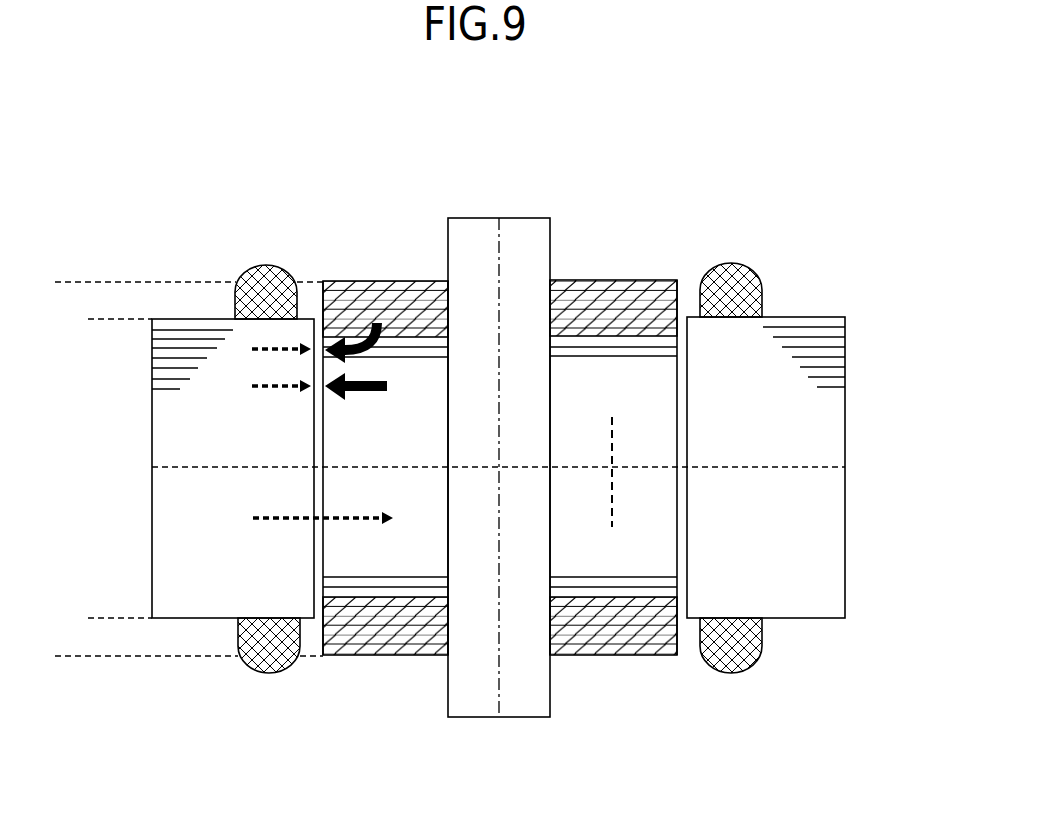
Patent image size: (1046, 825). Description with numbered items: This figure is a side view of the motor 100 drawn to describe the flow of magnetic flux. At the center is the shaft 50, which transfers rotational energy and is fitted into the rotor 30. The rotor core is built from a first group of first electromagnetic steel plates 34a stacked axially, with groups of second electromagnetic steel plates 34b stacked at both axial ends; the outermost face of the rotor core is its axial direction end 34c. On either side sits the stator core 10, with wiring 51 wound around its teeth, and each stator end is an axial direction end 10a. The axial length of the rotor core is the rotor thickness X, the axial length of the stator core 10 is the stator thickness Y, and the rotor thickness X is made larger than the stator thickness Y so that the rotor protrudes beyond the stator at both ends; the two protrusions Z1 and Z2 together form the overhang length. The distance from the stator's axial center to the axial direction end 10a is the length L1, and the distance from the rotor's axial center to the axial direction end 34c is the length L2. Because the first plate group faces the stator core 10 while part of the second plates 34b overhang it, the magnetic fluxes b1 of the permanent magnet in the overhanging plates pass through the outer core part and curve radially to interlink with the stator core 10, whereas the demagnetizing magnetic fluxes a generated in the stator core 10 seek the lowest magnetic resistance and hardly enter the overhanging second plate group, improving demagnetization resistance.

The motor 100 is at (633, 120).
The shaft 50 is at (527, 227).
The rotor 30 is at (641, 234).
The axial direction end 34c is at (380, 281).
The second electromagnetic steel plate 34b is at (645, 330).
The first electromagnetic steel plate 34a is at (630, 339).
The wiring 51 is at (733, 263).
The stator core 10 is at (753, 328).
The axial direction end 10a is at (187, 318).
The magnetic fluxes of demagnetization a is at (277, 517).
The magnetic fluxes b1 is at (360, 322).
The length L1 is at (243, 319).
The length L2 is at (422, 281).
The rotor thickness X is at (65, 282).
The stator thickness Y is at (98, 319).
The overhang length portion Z1 is at (98, 282).
The overhang length portion Z2 is at (98, 618).